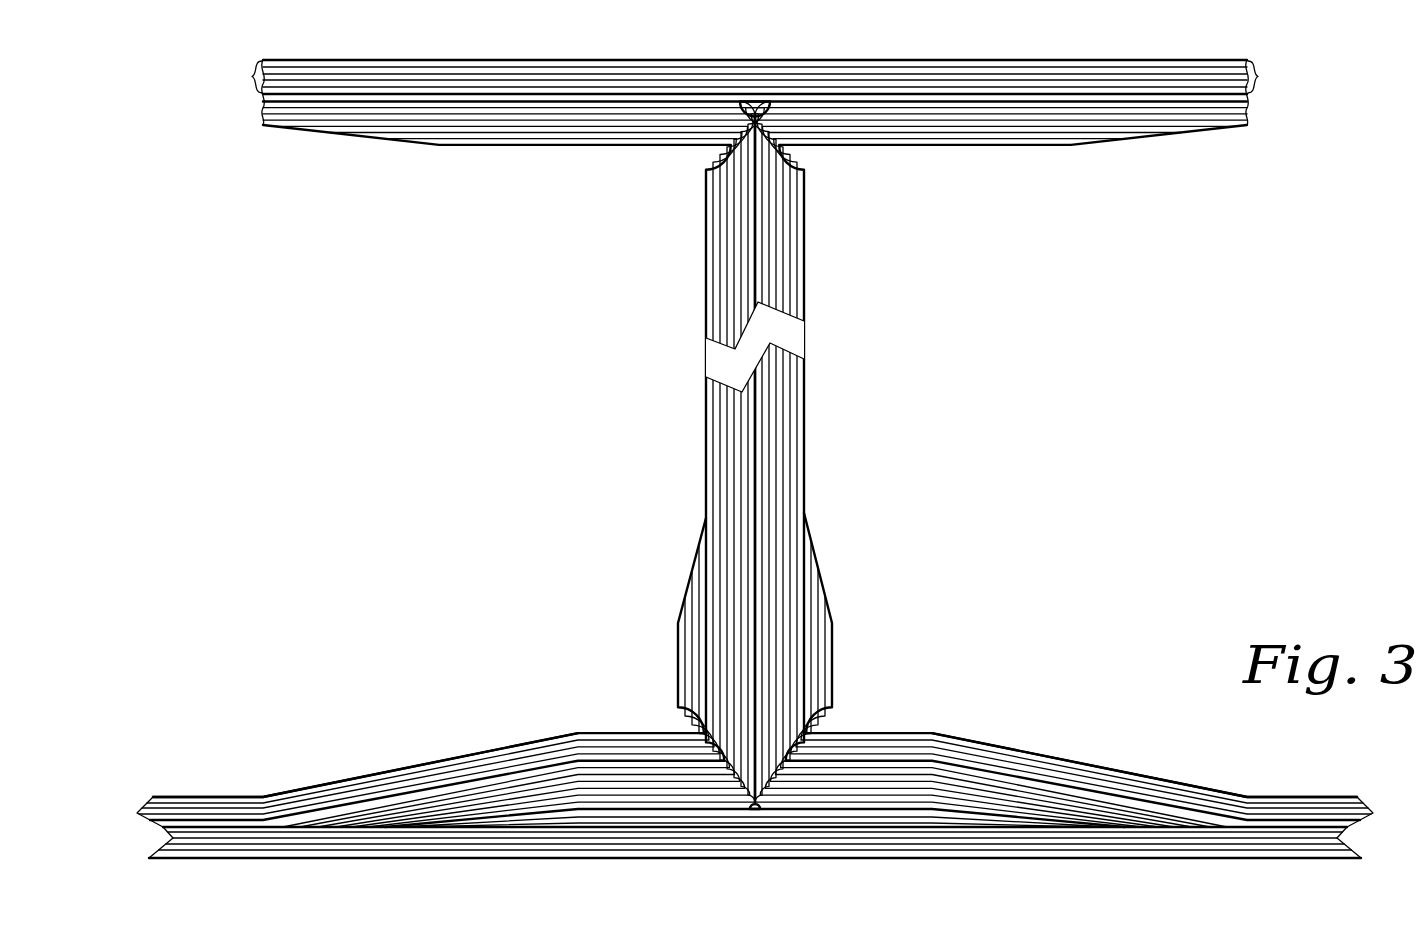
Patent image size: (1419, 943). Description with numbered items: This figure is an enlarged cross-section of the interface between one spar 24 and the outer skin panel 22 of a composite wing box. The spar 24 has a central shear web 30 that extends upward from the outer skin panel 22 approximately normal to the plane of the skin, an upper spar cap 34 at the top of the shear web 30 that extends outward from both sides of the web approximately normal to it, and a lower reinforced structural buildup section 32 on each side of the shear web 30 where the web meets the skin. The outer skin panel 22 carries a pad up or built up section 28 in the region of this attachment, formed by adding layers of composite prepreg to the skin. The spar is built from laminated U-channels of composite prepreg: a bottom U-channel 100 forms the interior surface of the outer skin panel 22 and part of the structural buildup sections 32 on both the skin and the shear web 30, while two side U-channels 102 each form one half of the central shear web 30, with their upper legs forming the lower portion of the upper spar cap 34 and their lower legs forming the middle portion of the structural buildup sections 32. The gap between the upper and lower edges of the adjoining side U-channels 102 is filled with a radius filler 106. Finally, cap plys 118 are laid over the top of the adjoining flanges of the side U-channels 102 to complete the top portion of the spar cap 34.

The outer skin panel 22 is at (1224, 870).
The spar 24 is at (478, 439).
The pad up section 28 is at (912, 833).
The central shear web 30 is at (817, 437).
The structural buildup section 32 is at (542, 729).
The upper spar cap 34 is at (895, 50).
The bottom U-channel 100 is at (1247, 786).
The side U-channel 102 is at (262, 97).
The radius filler 106 is at (756, 103).
The cap ply 118 is at (254, 76).